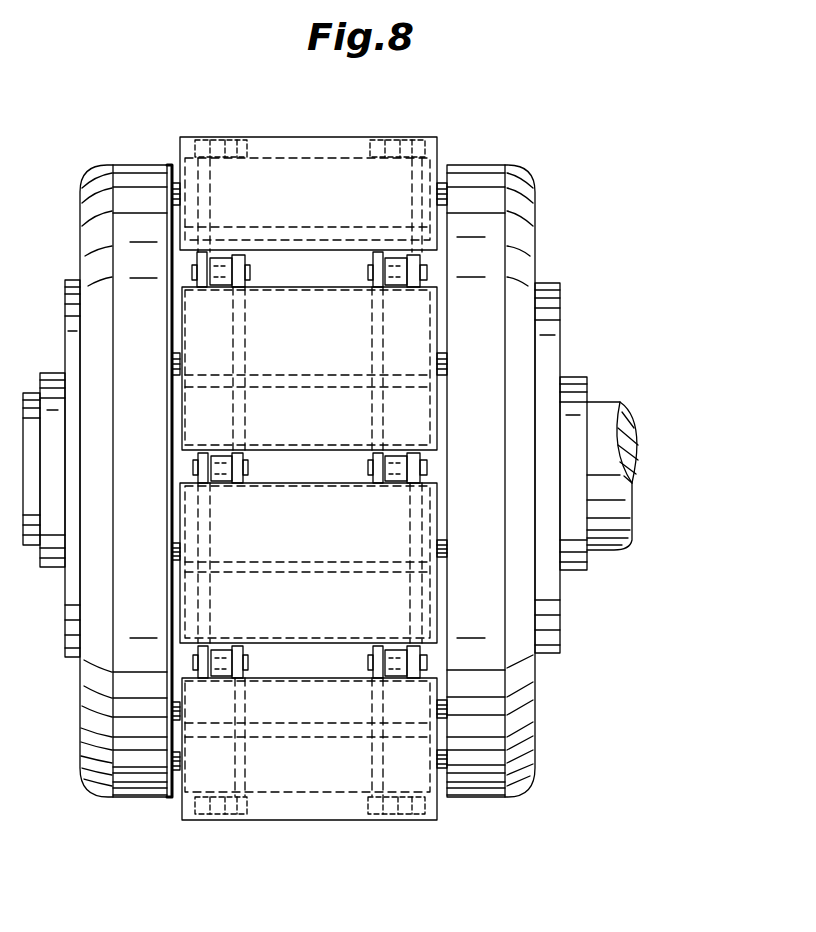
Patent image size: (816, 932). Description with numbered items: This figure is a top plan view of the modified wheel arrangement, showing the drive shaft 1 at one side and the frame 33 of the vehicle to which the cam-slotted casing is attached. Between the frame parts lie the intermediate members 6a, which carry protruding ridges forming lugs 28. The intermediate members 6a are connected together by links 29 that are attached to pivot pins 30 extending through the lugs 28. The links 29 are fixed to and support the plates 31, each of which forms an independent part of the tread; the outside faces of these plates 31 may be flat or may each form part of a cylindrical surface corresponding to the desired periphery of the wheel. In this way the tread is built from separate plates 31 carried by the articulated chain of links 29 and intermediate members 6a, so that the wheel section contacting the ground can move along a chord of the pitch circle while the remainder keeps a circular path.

The drive shaft 1 is at (604, 406).
The intermediate member 6a is at (333, 474).
The lug 28 is at (402, 282).
The link 29 is at (410, 196).
The pivot pin 30 is at (437, 152).
The plate 31 is at (290, 165).
The frame 33 is at (53, 565).